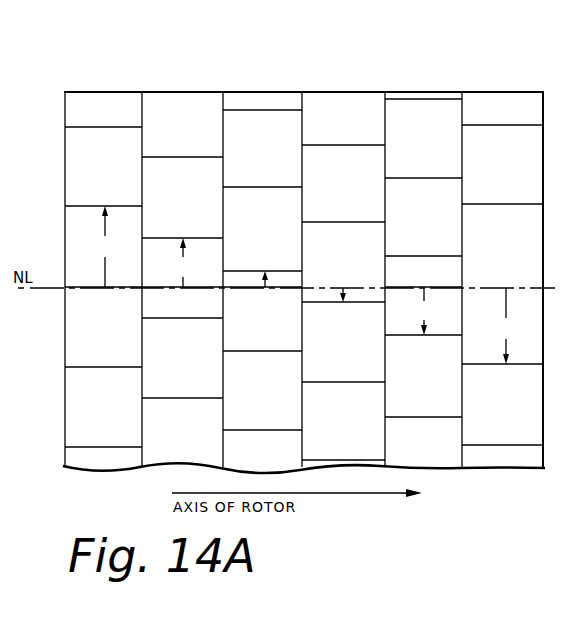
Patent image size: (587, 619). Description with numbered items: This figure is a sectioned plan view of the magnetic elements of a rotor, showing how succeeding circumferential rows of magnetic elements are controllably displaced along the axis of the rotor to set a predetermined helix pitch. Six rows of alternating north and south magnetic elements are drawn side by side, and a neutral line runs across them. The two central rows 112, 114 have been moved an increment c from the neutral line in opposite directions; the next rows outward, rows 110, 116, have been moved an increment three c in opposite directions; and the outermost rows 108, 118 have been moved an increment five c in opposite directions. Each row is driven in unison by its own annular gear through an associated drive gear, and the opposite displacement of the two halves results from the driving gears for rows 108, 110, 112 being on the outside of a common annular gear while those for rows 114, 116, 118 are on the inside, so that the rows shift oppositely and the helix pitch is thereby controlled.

The row of magnetic elements 108 is at (121, 88).
The row of magnetic elements 110 is at (200, 88).
The row of magnetic elements 112 is at (282, 88).
The row of magnetic elements 114 is at (350, 88).
The row of magnetic elements 116 is at (439, 88).
The row of magnetic elements 118 is at (514, 88).